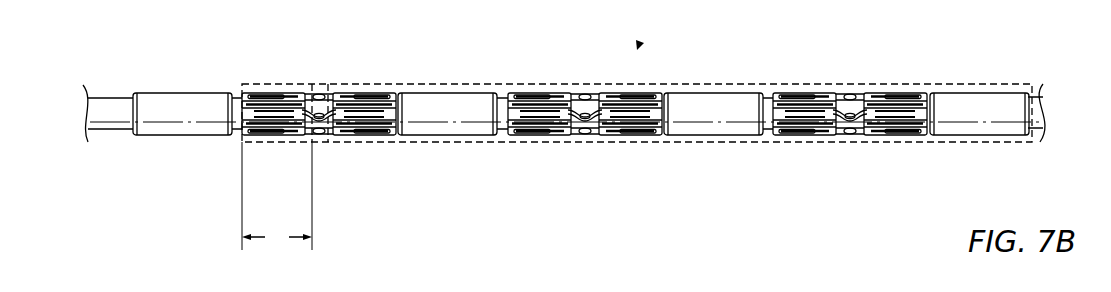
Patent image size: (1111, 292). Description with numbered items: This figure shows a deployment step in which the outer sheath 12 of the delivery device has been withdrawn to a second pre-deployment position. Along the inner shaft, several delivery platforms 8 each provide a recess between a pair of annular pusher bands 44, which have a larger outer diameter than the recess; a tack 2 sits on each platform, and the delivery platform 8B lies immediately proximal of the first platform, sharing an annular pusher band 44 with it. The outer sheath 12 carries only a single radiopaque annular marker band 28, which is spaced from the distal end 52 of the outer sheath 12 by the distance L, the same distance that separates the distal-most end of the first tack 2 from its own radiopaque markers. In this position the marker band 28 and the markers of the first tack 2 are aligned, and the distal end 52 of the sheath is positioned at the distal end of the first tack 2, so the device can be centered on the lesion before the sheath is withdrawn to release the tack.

The tack 2 is at (265, 91).
The outer sheath 12 is at (533, 83).
The radiopaque annular marker band 28 is at (323, 86).
The annular pusher band 44 is at (188, 116).
The distal end of the outer sheath 52 is at (238, 141).
The delivery platform 8 is at (279, 152).
The delivery platform located immediately proximal 8B is at (639, 45).